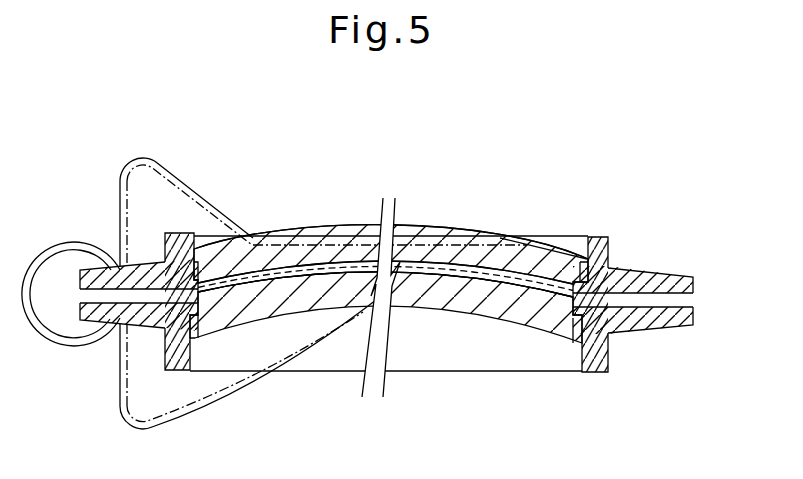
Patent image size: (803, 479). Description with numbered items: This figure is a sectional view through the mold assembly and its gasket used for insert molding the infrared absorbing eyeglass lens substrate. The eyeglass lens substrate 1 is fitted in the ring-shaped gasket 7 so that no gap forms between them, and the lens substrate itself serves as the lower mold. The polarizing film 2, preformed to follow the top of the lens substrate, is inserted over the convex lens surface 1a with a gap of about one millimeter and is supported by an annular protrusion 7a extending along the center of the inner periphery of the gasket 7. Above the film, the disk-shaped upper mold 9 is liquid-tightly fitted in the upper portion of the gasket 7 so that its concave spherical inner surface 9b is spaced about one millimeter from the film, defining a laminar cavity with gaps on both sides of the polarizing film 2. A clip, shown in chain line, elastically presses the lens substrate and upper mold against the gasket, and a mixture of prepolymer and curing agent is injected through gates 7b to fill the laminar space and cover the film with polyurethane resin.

The eyeglass lens substrate 1 is at (437, 300).
The convex lens surface 1a is at (488, 274).
The polarizing film 2 is at (438, 260).
The gasket 7 is at (172, 348).
The annular protrusion 7a is at (194, 280).
The gates 7b is at (152, 273).
The upper mold 9 is at (312, 253).
The inner surface 9b is at (345, 263).